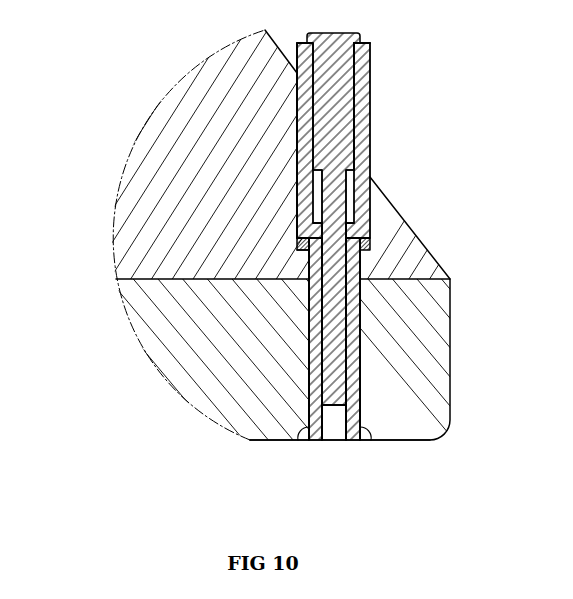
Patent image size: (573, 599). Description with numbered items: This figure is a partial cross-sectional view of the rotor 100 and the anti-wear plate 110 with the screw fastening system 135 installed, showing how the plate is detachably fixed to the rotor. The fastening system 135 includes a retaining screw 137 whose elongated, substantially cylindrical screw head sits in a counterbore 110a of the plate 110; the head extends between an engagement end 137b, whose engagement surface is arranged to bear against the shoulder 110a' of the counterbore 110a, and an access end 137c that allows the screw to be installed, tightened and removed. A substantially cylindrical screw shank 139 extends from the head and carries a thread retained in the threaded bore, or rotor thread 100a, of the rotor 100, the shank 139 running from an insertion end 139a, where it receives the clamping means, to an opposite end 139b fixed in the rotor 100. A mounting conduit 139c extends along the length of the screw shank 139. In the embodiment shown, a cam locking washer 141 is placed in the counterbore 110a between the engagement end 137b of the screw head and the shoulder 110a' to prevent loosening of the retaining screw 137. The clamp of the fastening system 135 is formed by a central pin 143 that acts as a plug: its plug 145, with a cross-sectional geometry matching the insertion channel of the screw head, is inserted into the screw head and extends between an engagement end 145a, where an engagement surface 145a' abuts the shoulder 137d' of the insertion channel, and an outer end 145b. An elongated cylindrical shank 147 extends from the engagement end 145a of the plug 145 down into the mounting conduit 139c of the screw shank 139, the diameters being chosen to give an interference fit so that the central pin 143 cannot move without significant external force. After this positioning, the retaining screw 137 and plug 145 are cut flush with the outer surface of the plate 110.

The rotor 100 is at (410, 363).
The rotor thread 100a is at (307, 422).
The plate 110 is at (385, 203).
The counterbore 110a is at (179, 224).
The shoulder 110a' is at (175, 275).
The screw fastening system 135 is at (303, 108).
The retaining screw 137 is at (370, 103).
The engagement end 137b is at (370, 240).
The access end 137c is at (370, 74).
The shoulder of the insertion channel 137d' is at (189, 182).
The screw shank 139 is at (360, 330).
The insertion end 139a is at (362, 276).
The opposite end 139b is at (361, 422).
The mounting conduit 139c is at (333, 415).
The cam locking washer 141 is at (300, 243).
The central pin 143 is at (338, 135).
The plug 145 is at (333, 75).
The engagement end 145a is at (410, 182).
The engagement surface 145a' is at (192, 156).
The outer end 145b is at (361, 40).
The shank 147 is at (330, 386).